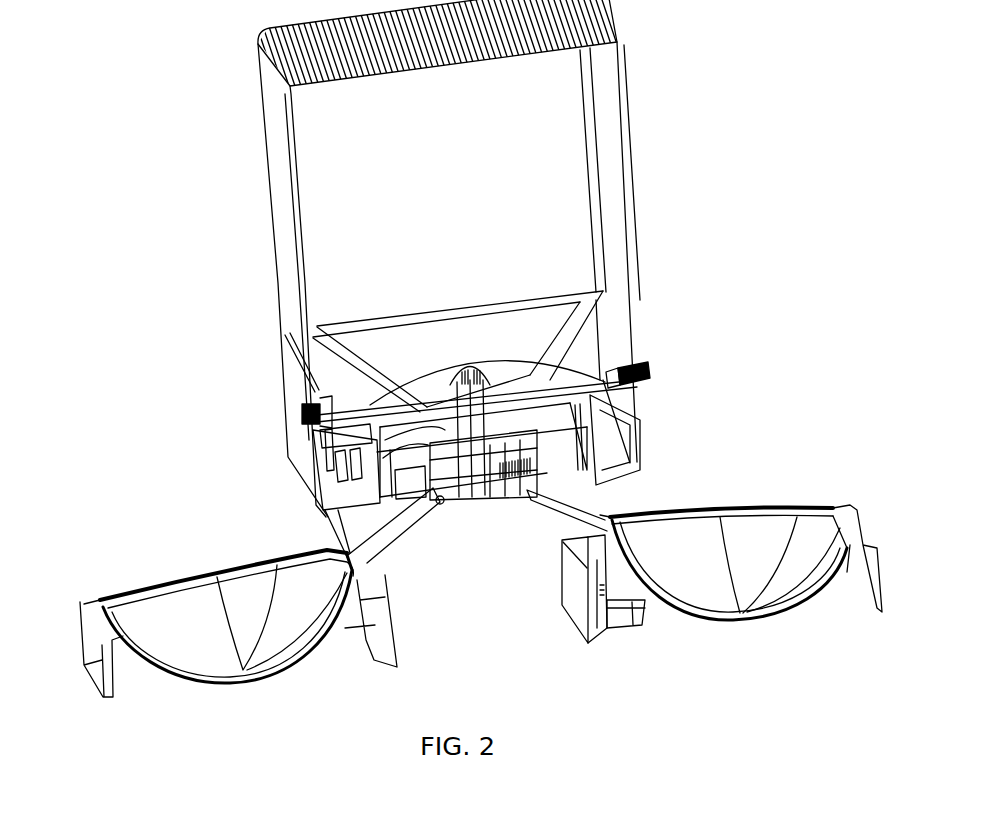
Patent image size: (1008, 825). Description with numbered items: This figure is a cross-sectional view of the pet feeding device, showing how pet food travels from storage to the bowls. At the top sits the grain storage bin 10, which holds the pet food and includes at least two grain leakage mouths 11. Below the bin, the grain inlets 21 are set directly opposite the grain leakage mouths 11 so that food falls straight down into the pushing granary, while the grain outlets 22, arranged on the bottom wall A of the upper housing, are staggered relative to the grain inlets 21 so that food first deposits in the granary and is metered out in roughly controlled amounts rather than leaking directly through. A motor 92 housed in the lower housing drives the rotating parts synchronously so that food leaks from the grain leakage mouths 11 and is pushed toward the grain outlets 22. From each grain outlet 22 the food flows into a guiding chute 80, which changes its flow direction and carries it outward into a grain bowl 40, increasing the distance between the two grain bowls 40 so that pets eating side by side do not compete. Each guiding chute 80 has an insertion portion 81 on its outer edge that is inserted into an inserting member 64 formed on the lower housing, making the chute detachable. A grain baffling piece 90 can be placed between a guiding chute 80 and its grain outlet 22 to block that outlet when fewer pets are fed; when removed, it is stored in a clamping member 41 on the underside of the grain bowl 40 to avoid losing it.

The grain storage bin 10 is at (540, 187).
The bottom wall A is at (627, 317).
The grain leakage mouth 11 is at (310, 337).
The grain inlet 21 is at (315, 383).
The grain outlet 22 is at (307, 417).
The motor 92 is at (643, 363).
The grain baffling piece 90 is at (623, 420).
The guiding chute 80 is at (593, 512).
The insertion portion 81 is at (442, 502).
The inserting member 64 is at (442, 502).
The clamping member 41 is at (352, 645).
The grain bowl 40 is at (187, 633).